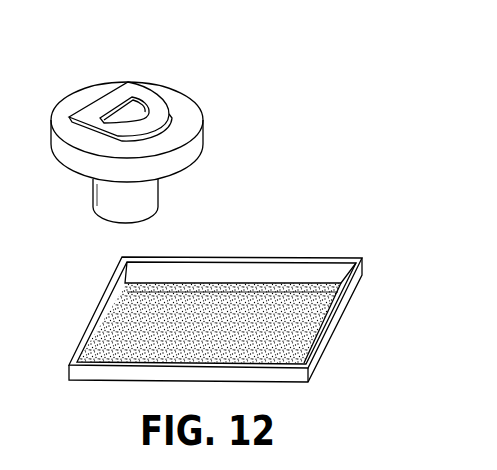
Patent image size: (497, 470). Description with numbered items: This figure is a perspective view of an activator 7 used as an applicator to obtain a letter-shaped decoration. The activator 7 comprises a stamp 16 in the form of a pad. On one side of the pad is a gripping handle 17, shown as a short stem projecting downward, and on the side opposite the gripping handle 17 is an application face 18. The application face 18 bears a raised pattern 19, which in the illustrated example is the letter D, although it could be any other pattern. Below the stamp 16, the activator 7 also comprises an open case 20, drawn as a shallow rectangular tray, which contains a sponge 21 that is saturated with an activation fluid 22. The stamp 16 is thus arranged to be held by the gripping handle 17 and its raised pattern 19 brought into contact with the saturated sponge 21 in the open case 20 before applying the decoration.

The activator 7 is at (202, 78).
The stamp 16 is at (213, 117).
The gripping handle 17 is at (147, 197).
The application face 18 is at (164, 93).
The raised pattern 19 is at (113, 100).
The open case 20 is at (273, 270).
The sponge 21 is at (128, 322).
The activation fluid 22 is at (303, 317).